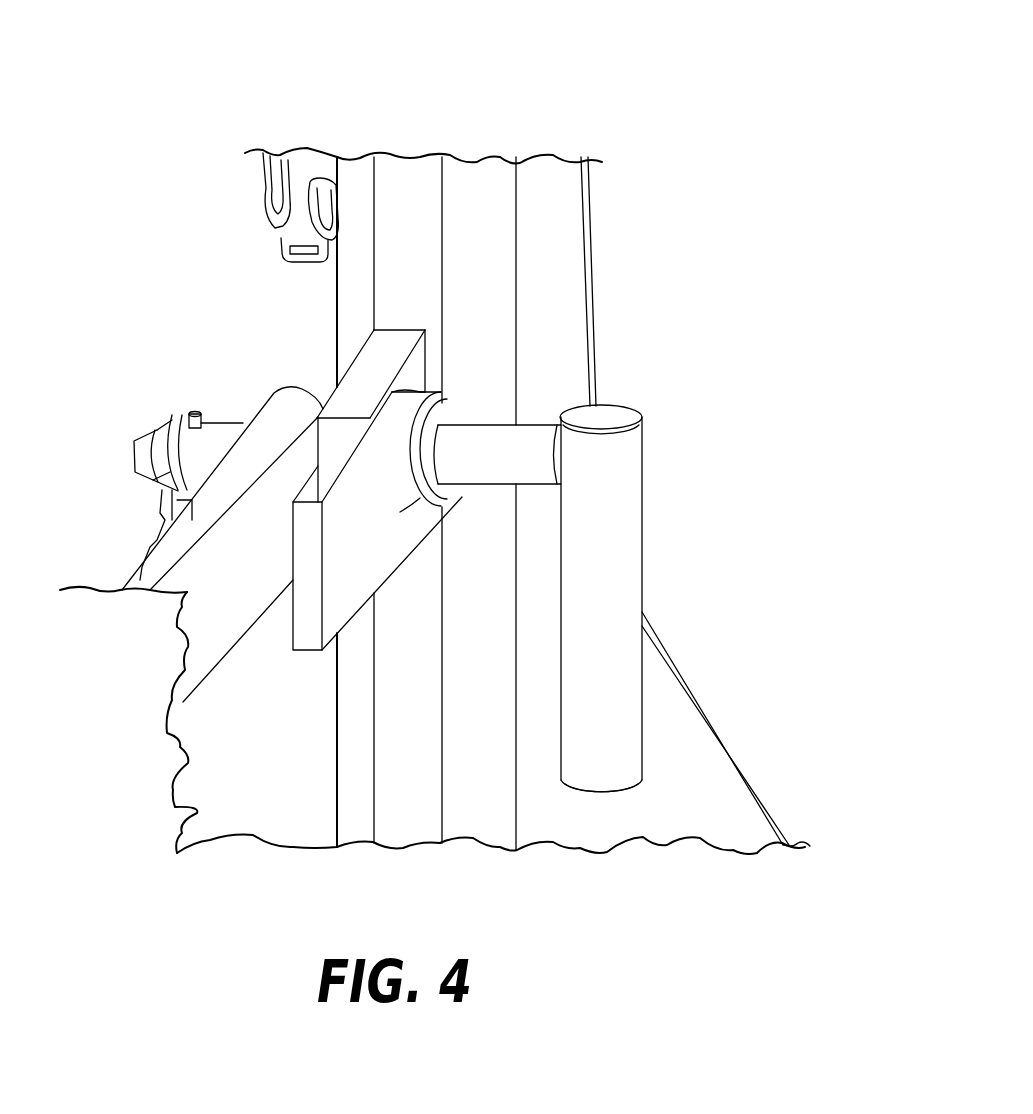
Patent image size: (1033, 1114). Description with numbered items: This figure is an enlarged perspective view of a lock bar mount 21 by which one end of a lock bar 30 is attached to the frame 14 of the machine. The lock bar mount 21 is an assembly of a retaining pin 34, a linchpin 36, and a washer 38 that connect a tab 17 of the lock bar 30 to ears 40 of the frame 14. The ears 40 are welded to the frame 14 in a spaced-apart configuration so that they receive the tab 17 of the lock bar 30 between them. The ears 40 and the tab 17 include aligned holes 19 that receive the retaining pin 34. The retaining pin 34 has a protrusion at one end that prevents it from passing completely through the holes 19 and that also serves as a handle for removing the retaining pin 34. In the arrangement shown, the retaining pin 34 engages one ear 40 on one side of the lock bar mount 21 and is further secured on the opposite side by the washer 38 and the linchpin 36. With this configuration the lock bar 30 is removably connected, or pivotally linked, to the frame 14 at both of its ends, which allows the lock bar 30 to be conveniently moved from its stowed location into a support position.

The lock bar mount 21 is at (614, 84).
The frame 14 is at (588, 207).
The tab 17 is at (367, 375).
The linchpin 36 is at (190, 412).
The washer 38 is at (254, 406).
The retaining pin 34 is at (607, 502).
The holes 19 is at (455, 497).
The lock bar 30 is at (308, 550).
The ears 40 is at (373, 593).